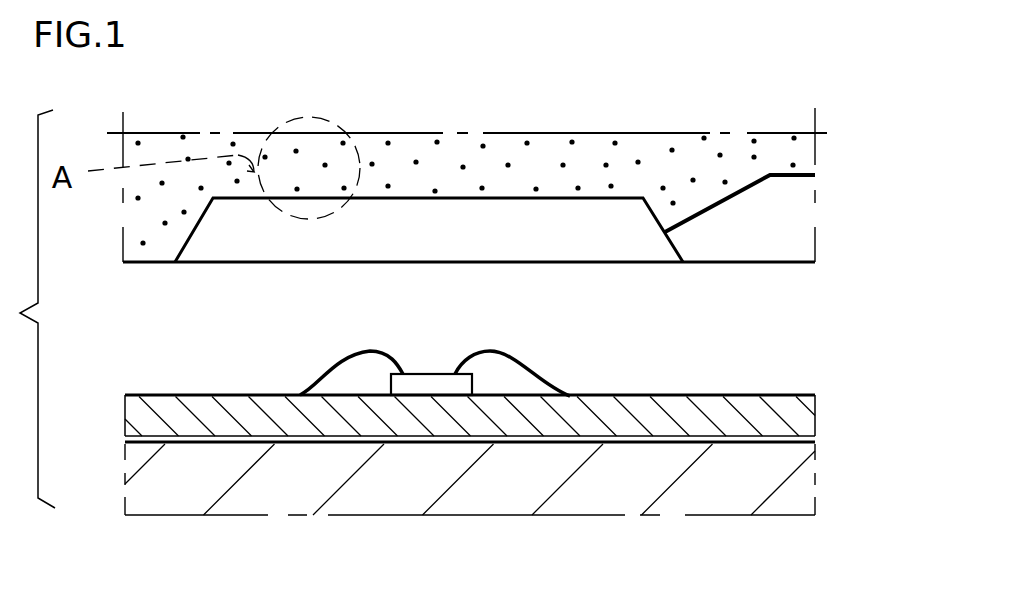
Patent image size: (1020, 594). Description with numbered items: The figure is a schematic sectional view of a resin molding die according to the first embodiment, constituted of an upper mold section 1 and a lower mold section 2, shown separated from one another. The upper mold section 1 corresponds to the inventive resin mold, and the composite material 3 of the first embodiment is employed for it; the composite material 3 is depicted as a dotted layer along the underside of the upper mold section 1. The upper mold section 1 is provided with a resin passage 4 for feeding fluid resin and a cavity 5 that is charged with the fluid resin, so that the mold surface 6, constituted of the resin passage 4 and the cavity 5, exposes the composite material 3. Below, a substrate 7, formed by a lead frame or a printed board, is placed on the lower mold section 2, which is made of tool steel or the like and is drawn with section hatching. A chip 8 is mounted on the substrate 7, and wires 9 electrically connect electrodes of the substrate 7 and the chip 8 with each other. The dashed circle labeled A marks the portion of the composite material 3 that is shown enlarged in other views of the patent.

The upper mold section 1 is at (864, 110).
The lower mold section 2 is at (862, 510).
The composite material 3 is at (633, 152).
The resin passage 4 is at (747, 228).
The cavity 5 is at (640, 238).
The mold surface 6 is at (597, 200).
The substrate 7 is at (787, 418).
The chip 8 is at (433, 385).
The wires 9 is at (345, 375).